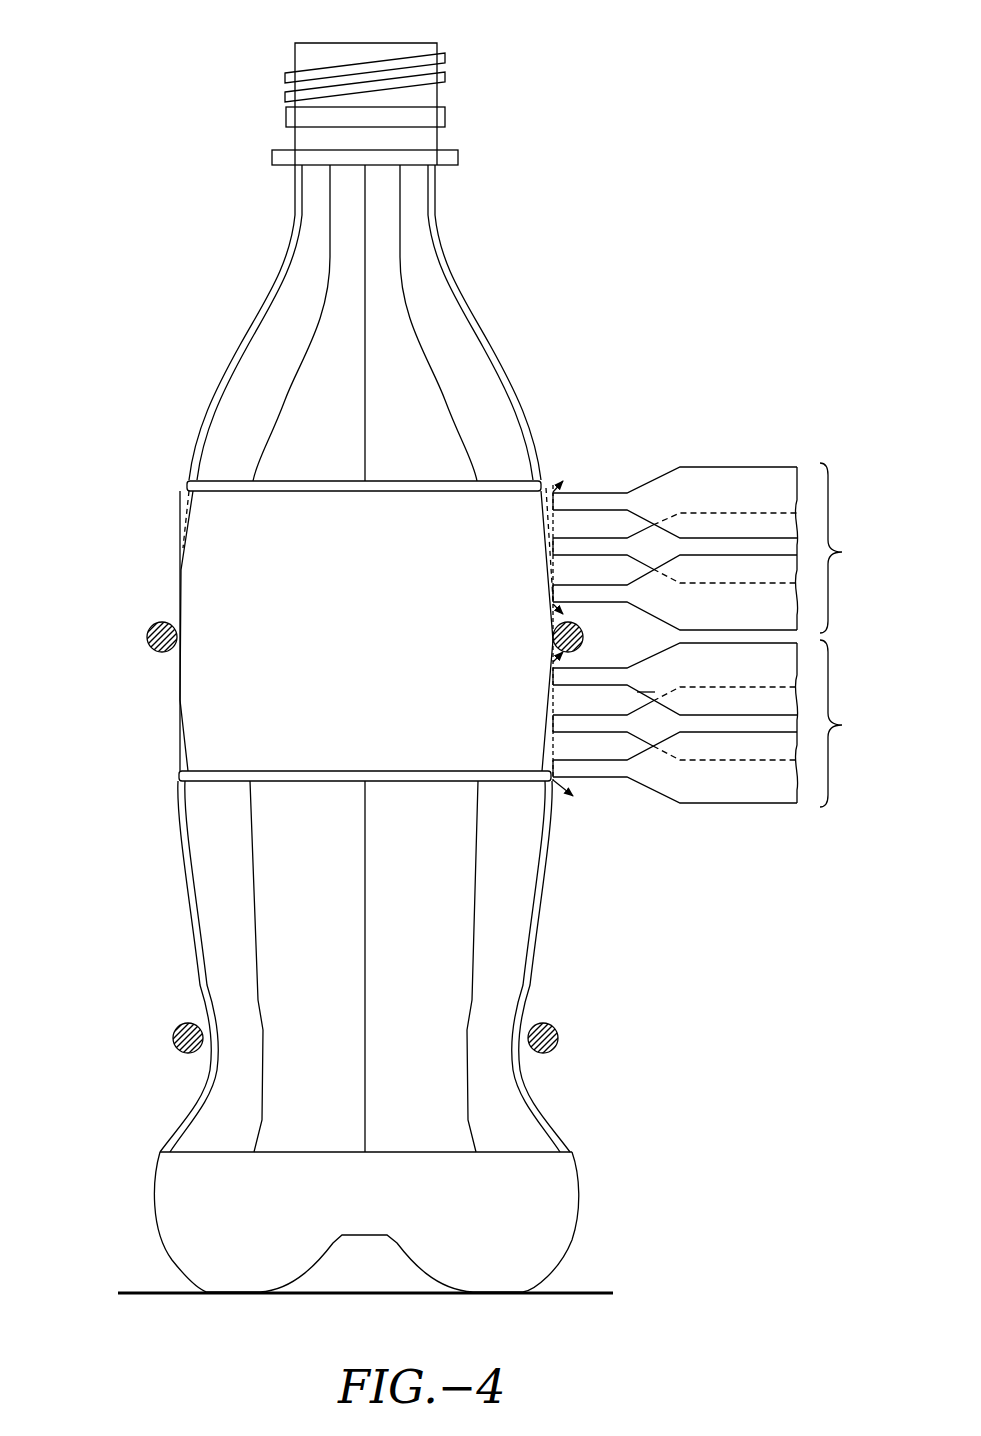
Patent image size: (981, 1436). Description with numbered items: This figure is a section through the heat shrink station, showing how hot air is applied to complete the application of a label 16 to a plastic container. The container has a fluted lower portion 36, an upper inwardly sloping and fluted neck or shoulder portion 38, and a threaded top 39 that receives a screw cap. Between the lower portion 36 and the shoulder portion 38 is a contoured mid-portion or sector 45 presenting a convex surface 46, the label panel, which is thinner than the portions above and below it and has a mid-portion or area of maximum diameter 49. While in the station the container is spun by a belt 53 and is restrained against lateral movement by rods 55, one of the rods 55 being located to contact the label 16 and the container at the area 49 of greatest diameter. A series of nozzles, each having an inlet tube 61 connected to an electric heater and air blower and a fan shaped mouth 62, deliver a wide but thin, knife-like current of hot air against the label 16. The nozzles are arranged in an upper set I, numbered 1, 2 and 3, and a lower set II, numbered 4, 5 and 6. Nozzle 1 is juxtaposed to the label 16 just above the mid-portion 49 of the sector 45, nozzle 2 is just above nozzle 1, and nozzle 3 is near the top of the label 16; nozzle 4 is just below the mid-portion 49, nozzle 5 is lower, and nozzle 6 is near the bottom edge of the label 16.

The label 16 is at (366, 650).
The nozzle No. 4 is at (417, 86).
The threaded top 39 is at (438, 50).
The neck or shoulder portion 38 is at (537, 433).
The belt 53 is at (180, 747).
The lower portion 36 is at (538, 943).
The mid-portion or sector 45 is at (158, 503).
The convex surface 46 is at (388, 656).
The mid-portion or area of maximum diameter 49 is at (178, 637).
The rods 55 is at (147, 638).
The inlet tube 61 is at (714, 608).
The fan shaped mouth 62 is at (675, 533).
The nozzle No. 1 is at (655, 609).
The nozzle No. 2 is at (655, 562).
The nozzle No. 3 is at (655, 517).
The nozzle No. 5 is at (655, 738).
The nozzle No. 6 is at (655, 784).